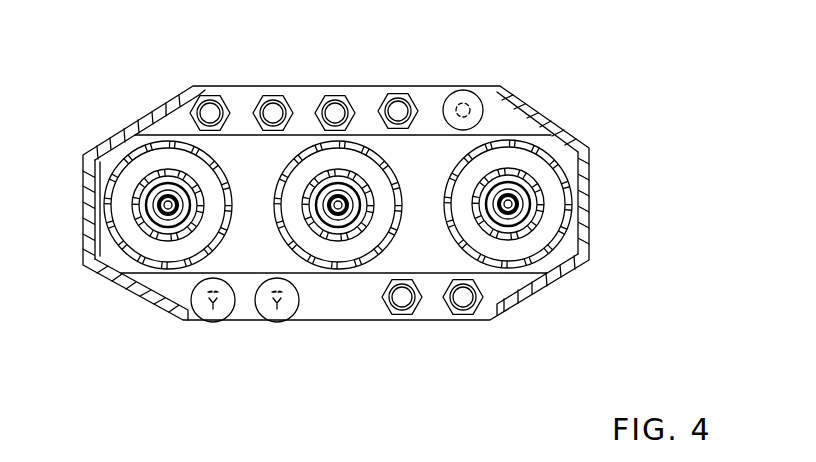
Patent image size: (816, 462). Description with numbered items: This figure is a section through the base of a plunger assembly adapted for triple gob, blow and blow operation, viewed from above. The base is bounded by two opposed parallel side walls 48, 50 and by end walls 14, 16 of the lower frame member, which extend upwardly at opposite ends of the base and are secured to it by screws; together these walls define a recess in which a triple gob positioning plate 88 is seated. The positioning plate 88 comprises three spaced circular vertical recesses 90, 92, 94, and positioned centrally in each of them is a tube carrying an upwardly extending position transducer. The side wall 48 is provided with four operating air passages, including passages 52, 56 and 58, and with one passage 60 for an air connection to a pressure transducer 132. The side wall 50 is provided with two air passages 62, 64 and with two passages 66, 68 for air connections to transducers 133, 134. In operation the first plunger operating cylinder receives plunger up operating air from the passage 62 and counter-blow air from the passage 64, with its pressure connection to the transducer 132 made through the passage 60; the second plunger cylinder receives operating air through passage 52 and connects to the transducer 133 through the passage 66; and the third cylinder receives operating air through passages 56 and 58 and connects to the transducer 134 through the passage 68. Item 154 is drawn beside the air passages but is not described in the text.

The end wall 14 is at (589, 195).
The end wall 16 is at (83, 207).
The side wall 48 is at (365, 98).
The side wall 50 is at (378, 313).
The operating air passage 52 is at (335, 103).
The operating air passage 56 is at (205, 108).
The operating air passage 58 is at (268, 105).
The passage 60 is at (495, 98).
The air passage 62 is at (463, 300).
The air passage 64 is at (400, 300).
The passage 66 is at (283, 324).
The passage 68 is at (214, 322).
The triple gob positioning plate 88 is at (273, 258).
The circular vertical recess 90 is at (533, 250).
The circular vertical recess 92 is at (333, 263).
The circular vertical recess 94 is at (143, 252).
The pressure transducer 132 is at (466, 104).
The transducer 133 is at (265, 306).
The transducer 134 is at (200, 306).
The nut 154 is at (400, 107).